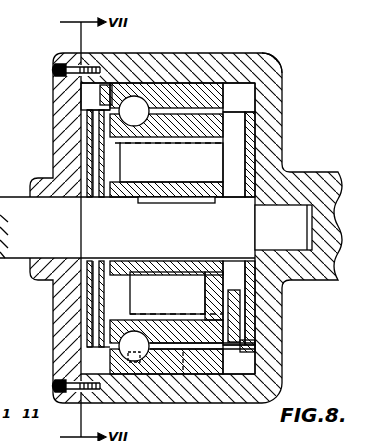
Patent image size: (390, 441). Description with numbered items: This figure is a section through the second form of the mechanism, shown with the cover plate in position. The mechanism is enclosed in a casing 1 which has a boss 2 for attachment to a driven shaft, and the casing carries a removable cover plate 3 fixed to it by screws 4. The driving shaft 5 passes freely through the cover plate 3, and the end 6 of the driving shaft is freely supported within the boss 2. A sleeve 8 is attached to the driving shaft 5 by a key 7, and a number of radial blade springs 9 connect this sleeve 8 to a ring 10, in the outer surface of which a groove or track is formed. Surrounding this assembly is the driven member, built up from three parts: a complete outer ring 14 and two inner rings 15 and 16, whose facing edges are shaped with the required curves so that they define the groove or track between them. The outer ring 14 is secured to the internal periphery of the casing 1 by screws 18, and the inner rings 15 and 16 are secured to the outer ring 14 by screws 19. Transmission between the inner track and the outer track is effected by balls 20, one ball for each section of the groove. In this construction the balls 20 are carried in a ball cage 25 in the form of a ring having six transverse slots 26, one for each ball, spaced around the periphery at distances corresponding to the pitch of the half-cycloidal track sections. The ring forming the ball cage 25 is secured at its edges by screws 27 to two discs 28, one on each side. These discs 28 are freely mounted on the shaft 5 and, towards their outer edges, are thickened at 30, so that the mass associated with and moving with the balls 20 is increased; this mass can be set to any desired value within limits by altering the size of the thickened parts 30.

The casing 1 is at (262, 92).
The boss 2 is at (327, 186).
The cover plate 3 is at (72, 91).
The screws 4 is at (72, 70).
The driving shaft 5 is at (43, 240).
The end of the driving shaft 6 is at (299, 238).
The key 7 is at (164, 200).
The sleeve 8 is at (197, 172).
The radial blade springs 9 is at (205, 155).
The ring 10 is at (200, 138).
The outer ring 14 is at (155, 96).
The inner ring 15 is at (192, 100).
The inner ring 16 is at (108, 97).
The screws 18 is at (192, 375).
The screws 19 is at (183, 395).
The balls 20 is at (131, 352).
The ball cage 25 is at (255, 352).
The transverse slots 26 is at (228, 340).
The screws 27 is at (256, 70).
The discs 28 is at (100, 291).
The thickened parts 30 is at (100, 318).